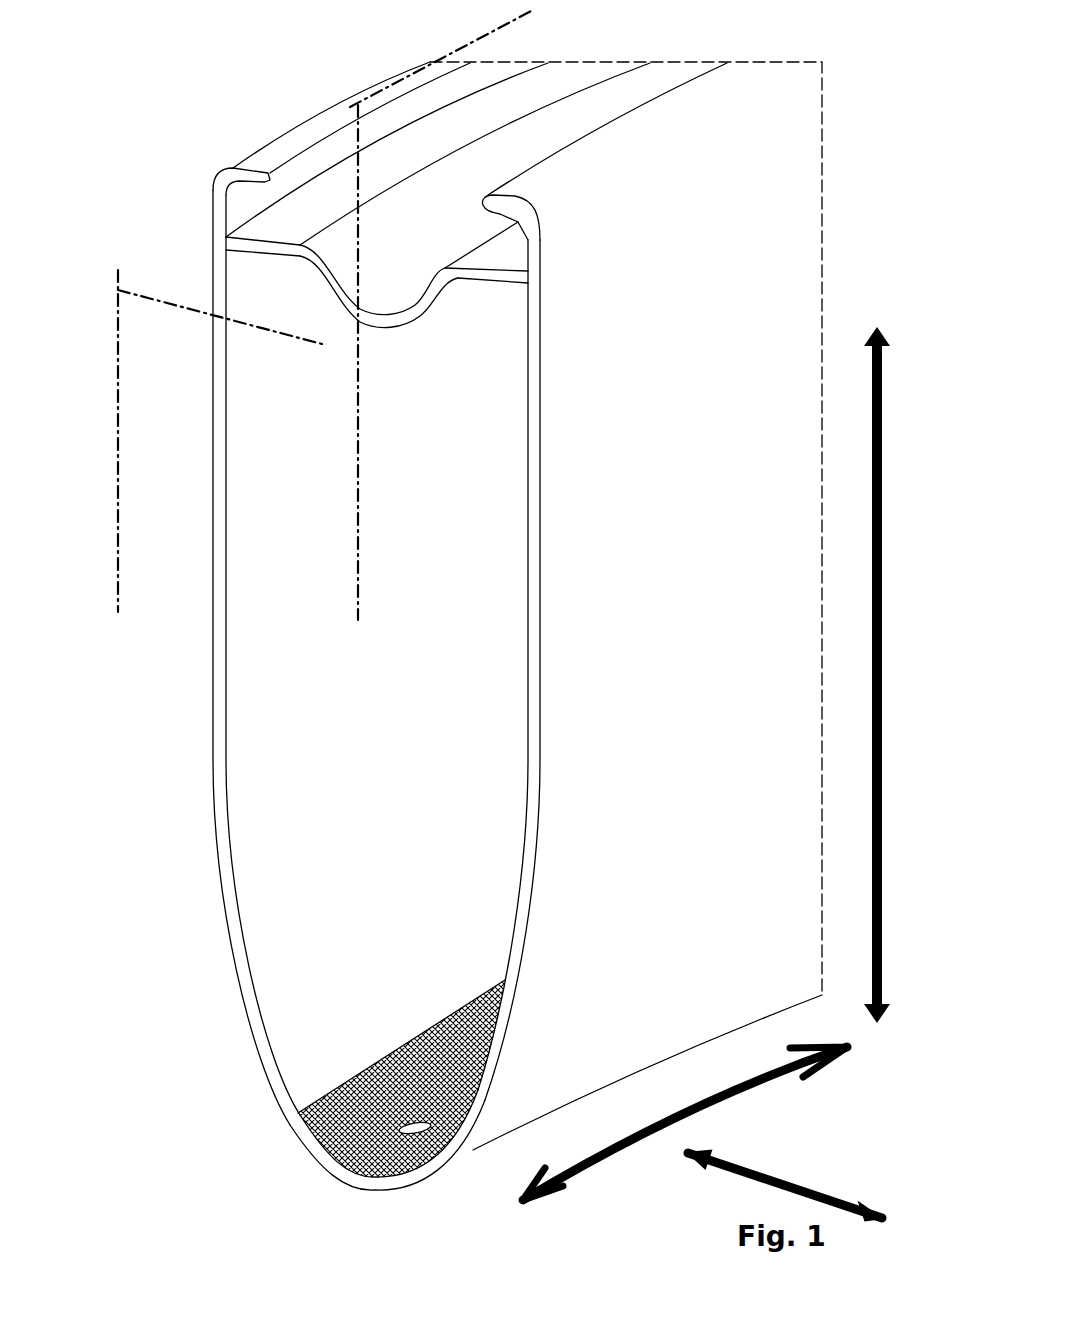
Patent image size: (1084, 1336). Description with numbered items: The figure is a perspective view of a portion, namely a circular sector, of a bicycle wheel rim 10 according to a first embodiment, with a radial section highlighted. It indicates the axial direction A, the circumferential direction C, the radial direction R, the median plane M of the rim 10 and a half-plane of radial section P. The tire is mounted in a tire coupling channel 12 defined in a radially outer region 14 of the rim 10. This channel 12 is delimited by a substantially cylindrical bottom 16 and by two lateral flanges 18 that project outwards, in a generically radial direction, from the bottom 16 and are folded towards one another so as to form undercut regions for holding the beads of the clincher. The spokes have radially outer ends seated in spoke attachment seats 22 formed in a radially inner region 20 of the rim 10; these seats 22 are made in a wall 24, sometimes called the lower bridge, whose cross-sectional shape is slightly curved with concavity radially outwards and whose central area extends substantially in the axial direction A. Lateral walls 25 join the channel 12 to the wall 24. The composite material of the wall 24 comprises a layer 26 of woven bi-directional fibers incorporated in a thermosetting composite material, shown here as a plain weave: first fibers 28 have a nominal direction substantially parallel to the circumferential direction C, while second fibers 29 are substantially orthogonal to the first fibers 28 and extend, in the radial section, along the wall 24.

The bicycle wheel rim 10 is at (165, 150).
The tire coupling channel 12 is at (333, 233).
The radially outer region 14 is at (755, 203).
The bottom 16 is at (392, 253).
The lateral flanges 18 is at (283, 152).
The radially inner region 20 is at (360, 709).
The spoke attachment seats 22 is at (413, 1120).
The wall 24 is at (297, 1142).
The lateral walls 25 is at (213, 700).
The layer of woven bi-directional fibers 26 is at (393, 1043).
The first fibers 28 is at (284, 1113).
The second fibers 29 is at (313, 1103).
The half-plane of radial section P is at (137, 296).
The median plane M is at (363, 100).
The radial direction R is at (878, 545).
The circumferential direction C is at (628, 1140).
The axial direction A is at (787, 1180).